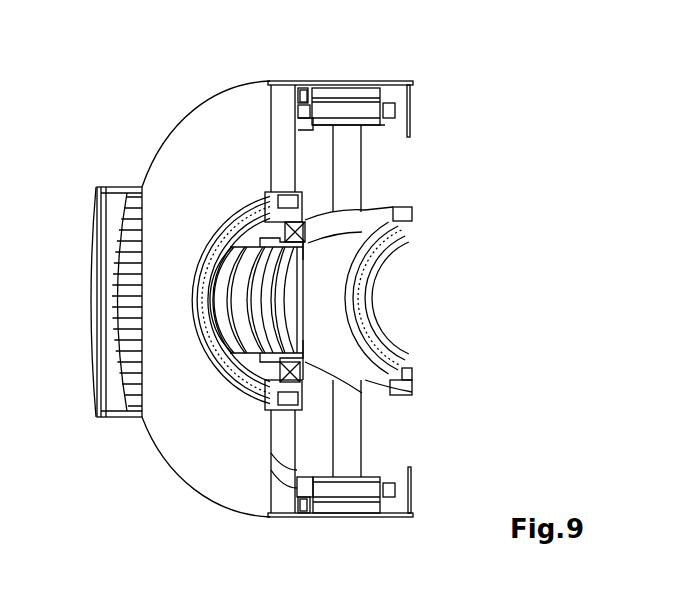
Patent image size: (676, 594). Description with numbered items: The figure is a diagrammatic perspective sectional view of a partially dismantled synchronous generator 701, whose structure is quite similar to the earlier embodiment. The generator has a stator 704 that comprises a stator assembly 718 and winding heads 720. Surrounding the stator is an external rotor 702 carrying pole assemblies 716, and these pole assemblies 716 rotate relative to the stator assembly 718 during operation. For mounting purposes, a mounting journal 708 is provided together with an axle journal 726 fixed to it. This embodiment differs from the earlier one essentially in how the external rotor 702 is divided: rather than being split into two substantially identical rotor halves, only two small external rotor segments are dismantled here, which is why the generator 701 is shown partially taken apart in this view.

The synchronous generator 701 is at (122, 81).
The external rotor 702 is at (223, 123).
The stator 704 is at (348, 182).
The mounting journal 708 is at (327, 316).
The pole assemblies 716 is at (343, 93).
The stator assembly 718 is at (365, 118).
The winding heads 720 is at (396, 109).
The axle journal 726 is at (242, 324).